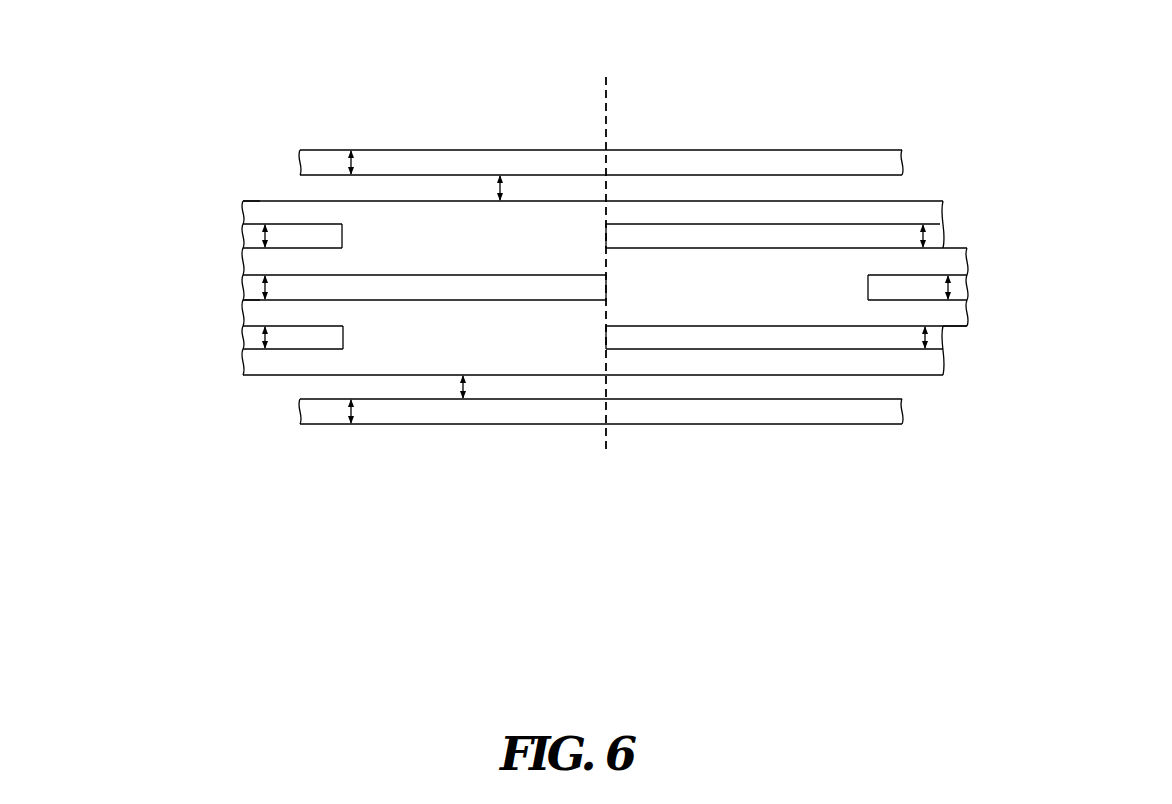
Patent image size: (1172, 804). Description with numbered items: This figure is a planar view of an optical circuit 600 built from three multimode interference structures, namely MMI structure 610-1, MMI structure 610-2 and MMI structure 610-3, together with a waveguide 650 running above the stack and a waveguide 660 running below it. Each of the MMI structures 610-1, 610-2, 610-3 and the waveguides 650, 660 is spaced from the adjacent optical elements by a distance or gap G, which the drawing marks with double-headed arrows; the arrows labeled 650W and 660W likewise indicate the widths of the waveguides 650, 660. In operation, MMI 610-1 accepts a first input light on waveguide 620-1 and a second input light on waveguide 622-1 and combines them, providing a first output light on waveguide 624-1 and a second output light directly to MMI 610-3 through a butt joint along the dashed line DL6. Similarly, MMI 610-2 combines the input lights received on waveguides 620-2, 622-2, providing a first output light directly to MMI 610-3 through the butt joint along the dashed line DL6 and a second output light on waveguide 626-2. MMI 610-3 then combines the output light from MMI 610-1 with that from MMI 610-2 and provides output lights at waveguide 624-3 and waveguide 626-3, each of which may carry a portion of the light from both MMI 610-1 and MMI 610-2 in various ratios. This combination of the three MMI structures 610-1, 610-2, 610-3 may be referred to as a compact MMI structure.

The optical circuit 600 is at (169, 70).
The MMI structure 610-1 is at (593, 238).
The MMI structure 610-2 is at (593, 325).
The MMI structure 610-3 is at (842, 287).
The waveguide 620-1 is at (257, 205).
The waveguide 620-2 is at (243, 312).
The waveguide 622-1 is at (243, 262).
The waveguide 622-2 is at (262, 372).
The waveguide 624-1 is at (810, 210).
The waveguide 624-3 is at (949, 261).
The waveguide 626-2 is at (750, 362).
The waveguide 626-3 is at (949, 313).
The waveguide 650 is at (323, 160).
The width of upper conductive line 650W is at (350, 150).
The waveguide 660 is at (525, 412).
The width of lower conductive line 660W is at (350, 424).
The gap G is at (500, 175).
The dashed line DL6 is at (606, 112).